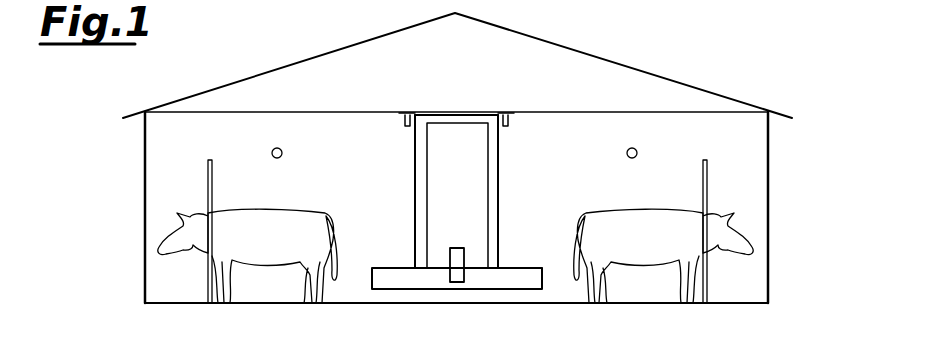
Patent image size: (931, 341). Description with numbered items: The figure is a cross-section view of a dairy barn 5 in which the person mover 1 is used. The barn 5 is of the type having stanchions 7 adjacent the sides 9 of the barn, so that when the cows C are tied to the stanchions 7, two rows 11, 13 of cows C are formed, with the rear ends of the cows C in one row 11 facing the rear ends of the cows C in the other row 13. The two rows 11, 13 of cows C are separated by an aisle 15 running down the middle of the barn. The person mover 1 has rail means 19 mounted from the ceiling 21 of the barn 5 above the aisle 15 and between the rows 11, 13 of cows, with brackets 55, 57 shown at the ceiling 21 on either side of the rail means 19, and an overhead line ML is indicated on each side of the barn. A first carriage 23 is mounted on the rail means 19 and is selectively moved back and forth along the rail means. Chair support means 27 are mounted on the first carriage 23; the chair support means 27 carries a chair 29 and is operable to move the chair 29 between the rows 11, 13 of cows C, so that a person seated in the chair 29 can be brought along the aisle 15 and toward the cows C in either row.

The person mover 1 is at (413, 229).
The dairy barn 5 is at (686, 57).
The stanchions 7 is at (208, 275).
The sides 9 is at (145, 180).
The row 11 is at (287, 194).
The row 13 is at (634, 204).
The aisle 15 is at (509, 244).
The rail means 19 is at (514, 129).
The ceiling 21 is at (271, 113).
The first carriage 23 is at (413, 165).
The chair support means 27 is at (372, 280).
The chair 29 is at (464, 272).
The left bracket 55 is at (408, 124).
The right bracket 57 is at (511, 117).
The cows C is at (318, 212).
The milk line ML is at (268, 148).